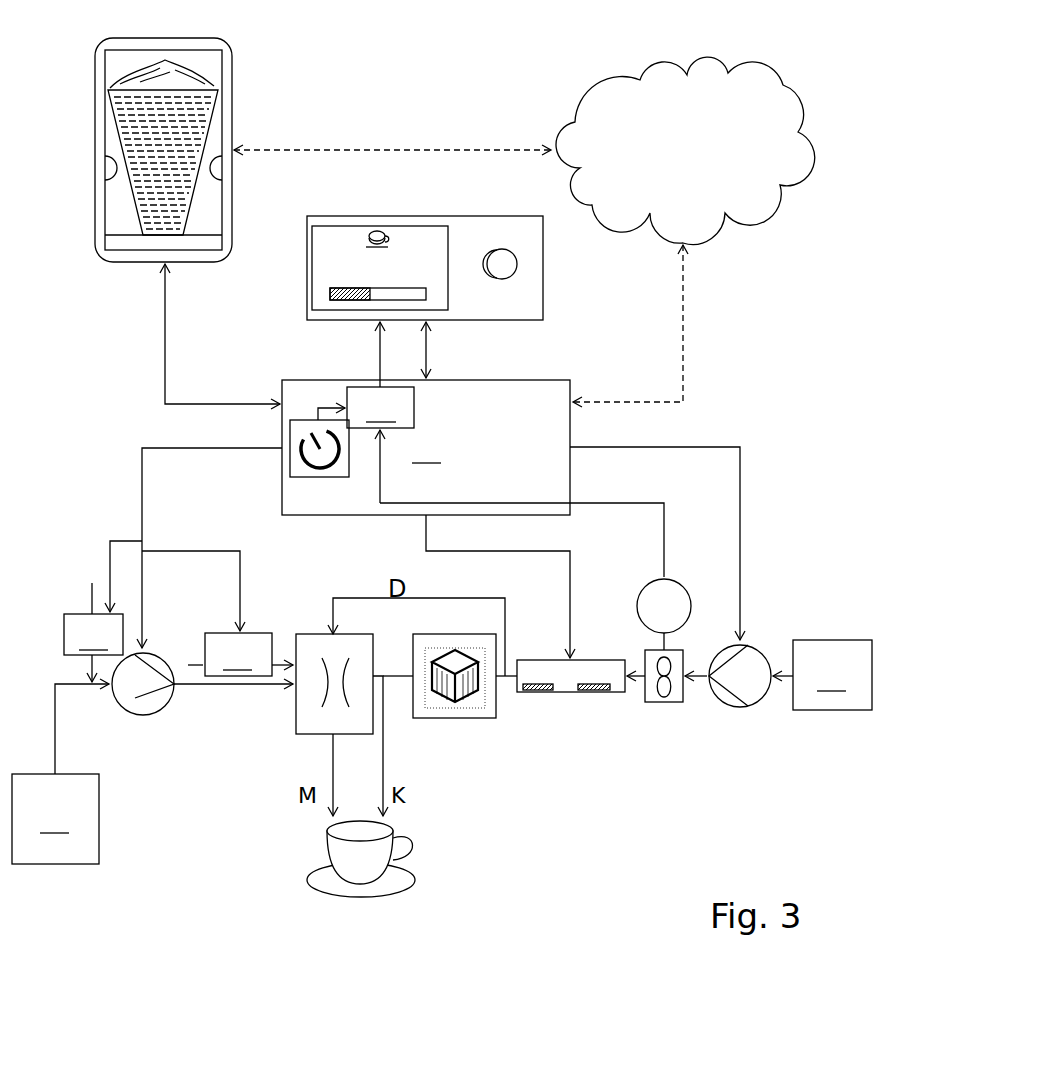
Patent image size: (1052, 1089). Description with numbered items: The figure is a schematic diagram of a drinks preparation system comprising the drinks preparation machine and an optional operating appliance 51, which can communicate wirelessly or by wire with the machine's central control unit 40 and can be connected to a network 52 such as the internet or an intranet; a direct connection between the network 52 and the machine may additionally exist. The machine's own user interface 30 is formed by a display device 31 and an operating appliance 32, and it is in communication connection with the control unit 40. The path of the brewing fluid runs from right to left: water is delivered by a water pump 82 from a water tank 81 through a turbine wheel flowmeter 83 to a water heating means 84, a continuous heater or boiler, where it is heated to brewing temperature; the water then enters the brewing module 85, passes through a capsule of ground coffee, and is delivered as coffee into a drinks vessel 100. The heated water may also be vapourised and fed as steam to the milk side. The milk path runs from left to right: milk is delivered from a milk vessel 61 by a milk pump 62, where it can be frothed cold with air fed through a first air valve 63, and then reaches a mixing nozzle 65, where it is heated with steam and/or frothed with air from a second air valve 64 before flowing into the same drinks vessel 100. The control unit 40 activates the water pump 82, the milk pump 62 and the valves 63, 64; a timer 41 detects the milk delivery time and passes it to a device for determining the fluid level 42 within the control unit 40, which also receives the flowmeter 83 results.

The user interface 30 is at (471, 222).
The display device 31 is at (420, 262).
The operating appliance 32 is at (505, 258).
The central control unit 40 is at (401, 447).
The timer 41 is at (292, 470).
The device for determining the fluid level 42 is at (380, 407).
The operating appliance 51 is at (123, 207).
The network 52 is at (728, 190).
The milk vessel 61 is at (60, 774).
The milk pump 62 is at (137, 700).
The first air valve 63 is at (93, 632).
The second air valve 64 is at (240, 654).
The mixing nozzle 65 is at (310, 725).
The water tank 81 is at (832, 675).
The water pump 82 is at (755, 693).
The flowmeter 83 is at (678, 694).
The water heating means 84 is at (577, 668).
The brewing module 85 is at (490, 718).
The drinks vessel 100 is at (345, 862).